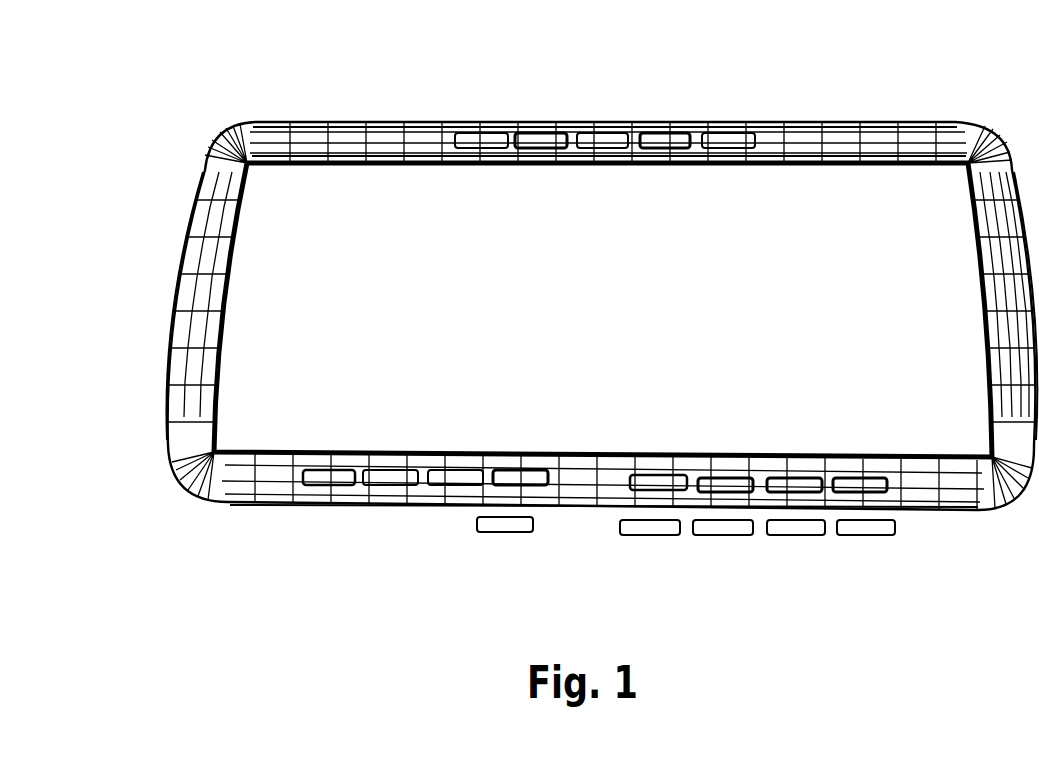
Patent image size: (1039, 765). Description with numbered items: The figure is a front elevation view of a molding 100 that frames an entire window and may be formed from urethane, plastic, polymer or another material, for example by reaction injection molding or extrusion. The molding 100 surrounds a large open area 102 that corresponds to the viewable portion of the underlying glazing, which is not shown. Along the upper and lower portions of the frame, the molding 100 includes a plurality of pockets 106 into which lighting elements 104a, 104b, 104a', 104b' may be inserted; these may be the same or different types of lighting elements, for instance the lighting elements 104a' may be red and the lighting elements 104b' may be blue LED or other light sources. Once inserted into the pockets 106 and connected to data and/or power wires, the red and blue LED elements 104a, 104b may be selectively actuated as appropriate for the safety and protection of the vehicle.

The molding 100 is at (938, 140).
The large open area 102 is at (623, 323).
The lighting element 104a is at (519, 304).
The lighting element 104b is at (528, 304).
The lighting element 104a' is at (680, 558).
The lighting element 104b' is at (649, 559).
The pocket 106 is at (527, 470).